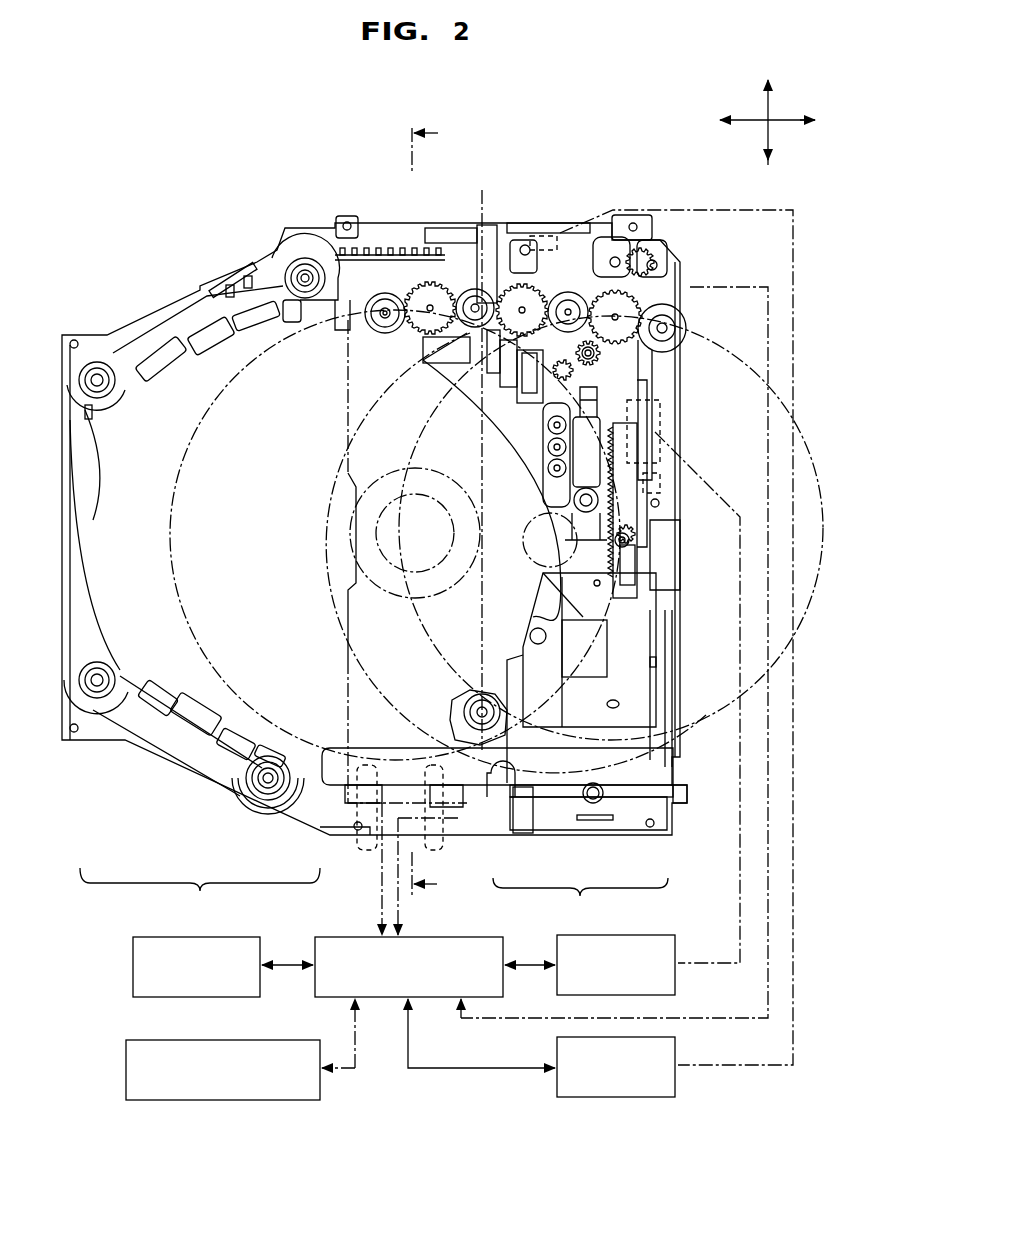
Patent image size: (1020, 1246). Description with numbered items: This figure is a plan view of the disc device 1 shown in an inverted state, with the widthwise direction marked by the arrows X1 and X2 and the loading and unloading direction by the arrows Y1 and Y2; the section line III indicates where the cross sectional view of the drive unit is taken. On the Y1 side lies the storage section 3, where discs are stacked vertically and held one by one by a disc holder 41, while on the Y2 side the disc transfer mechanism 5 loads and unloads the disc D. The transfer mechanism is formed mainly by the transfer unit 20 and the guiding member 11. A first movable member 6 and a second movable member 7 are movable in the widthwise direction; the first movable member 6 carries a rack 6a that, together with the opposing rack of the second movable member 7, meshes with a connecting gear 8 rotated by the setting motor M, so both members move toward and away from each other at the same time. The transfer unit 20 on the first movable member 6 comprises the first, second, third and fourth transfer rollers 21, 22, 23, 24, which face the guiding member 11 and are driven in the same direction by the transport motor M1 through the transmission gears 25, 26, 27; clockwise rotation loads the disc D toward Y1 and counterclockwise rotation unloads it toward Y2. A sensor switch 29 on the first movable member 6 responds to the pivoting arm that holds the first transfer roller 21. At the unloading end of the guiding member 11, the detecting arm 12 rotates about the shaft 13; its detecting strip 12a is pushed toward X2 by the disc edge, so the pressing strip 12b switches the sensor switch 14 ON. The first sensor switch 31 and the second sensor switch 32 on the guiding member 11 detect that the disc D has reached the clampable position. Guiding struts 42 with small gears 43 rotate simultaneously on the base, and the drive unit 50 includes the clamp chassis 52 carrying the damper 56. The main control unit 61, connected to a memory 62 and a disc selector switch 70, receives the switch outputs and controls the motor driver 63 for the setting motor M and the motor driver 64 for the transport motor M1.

The disc device 1 is at (193, 250).
The storage section 3 is at (200, 895).
The disc transfer mechanism 5 is at (580, 901).
The first movable member 6 is at (642, 587).
The rack 6a is at (632, 572).
The second movable member 7 is at (655, 690).
The connecting gear 8 is at (630, 537).
The guiding member 11 is at (400, 760).
The detecting arm 12 is at (650, 805).
The detecting strip 12a is at (688, 793).
The pressing strip 12b is at (523, 805).
The shaft 13 is at (593, 805).
The sensor switch 14 is at (503, 797).
The transfer unit 20 is at (567, 212).
The first transfer roller 21 is at (688, 325).
The second transfer roller 22 is at (610, 372).
The third transfer roller 23 is at (473, 292).
The fourth transfer roller 24 is at (385, 295).
The transmission gear 25 is at (640, 302).
The transmission gear 26 is at (515, 288).
The transmission gear 27 is at (443, 298).
The sensor switch 29 is at (660, 243).
The first sensor switch 31 is at (429, 850).
The second sensor switch 32 is at (367, 850).
The disc holder 41 is at (70, 442).
The guiding strut 42 is at (305, 272).
The small gear 43 is at (275, 262).
The drive unit 50 is at (345, 636).
The clamp chassis 52 is at (358, 382).
The damper 56 is at (415, 482).
The main control unit 61 is at (443, 1000).
The memory 62 is at (133, 966).
The motor driver 63 is at (678, 982).
The motor driver 64 is at (678, 1080).
The disc selector switch 70 is at (126, 1062).
The disc D is at (165, 553).
The setting motor M is at (655, 432).
The transport motor M1 is at (482, 222).
The line III— III is at (437, 509).
The direction X1 is at (769, 104).
The direction X2 is at (769, 174).
The direction Y1 is at (751, 122).
The direction Y2 is at (825, 122).